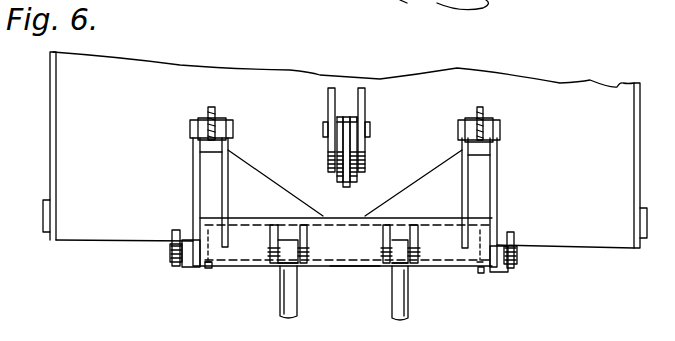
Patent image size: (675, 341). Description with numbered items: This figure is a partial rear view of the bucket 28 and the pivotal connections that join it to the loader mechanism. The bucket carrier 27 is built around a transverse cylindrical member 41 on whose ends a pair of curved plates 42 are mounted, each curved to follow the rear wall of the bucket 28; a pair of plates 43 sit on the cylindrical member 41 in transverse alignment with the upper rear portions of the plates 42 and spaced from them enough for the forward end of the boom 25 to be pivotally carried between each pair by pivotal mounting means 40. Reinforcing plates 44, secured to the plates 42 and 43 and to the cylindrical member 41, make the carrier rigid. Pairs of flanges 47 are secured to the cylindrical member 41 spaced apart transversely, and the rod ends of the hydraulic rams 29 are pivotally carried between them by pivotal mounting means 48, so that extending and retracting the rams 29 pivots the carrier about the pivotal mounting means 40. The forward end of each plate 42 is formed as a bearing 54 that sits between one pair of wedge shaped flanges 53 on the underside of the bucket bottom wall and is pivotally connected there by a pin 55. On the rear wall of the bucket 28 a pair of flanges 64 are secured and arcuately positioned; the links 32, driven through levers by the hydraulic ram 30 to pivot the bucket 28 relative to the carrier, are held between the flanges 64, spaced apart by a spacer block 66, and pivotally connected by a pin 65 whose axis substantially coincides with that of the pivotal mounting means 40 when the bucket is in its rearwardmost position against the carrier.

The boom 25 is at (215, 99).
The bucket carrier 27 is at (343, 270).
The bucket 28 is at (256, 92).
The hydraulic rams 29 is at (284, 298).
The hydraulic ram 30 is at (428, 0).
The links 32 is at (345, 186).
The pivotal mounting means 40 is at (189, 130).
The cylindrical member 41 is at (366, 267).
The plates 42 is at (192, 186).
The plates 43 is at (228, 188).
The reinforcing plates 44 is at (296, 183).
The flanges 47 is at (275, 224).
The pivotal mounting means 48 is at (276, 266).
The wedge shaped flanges 53 is at (201, 268).
The bearing 54 is at (171, 250).
The pin 55 is at (175, 266).
The flanges 64 is at (327, 92).
The pin 65 is at (323, 130).
The spacer block 66 is at (349, 116).